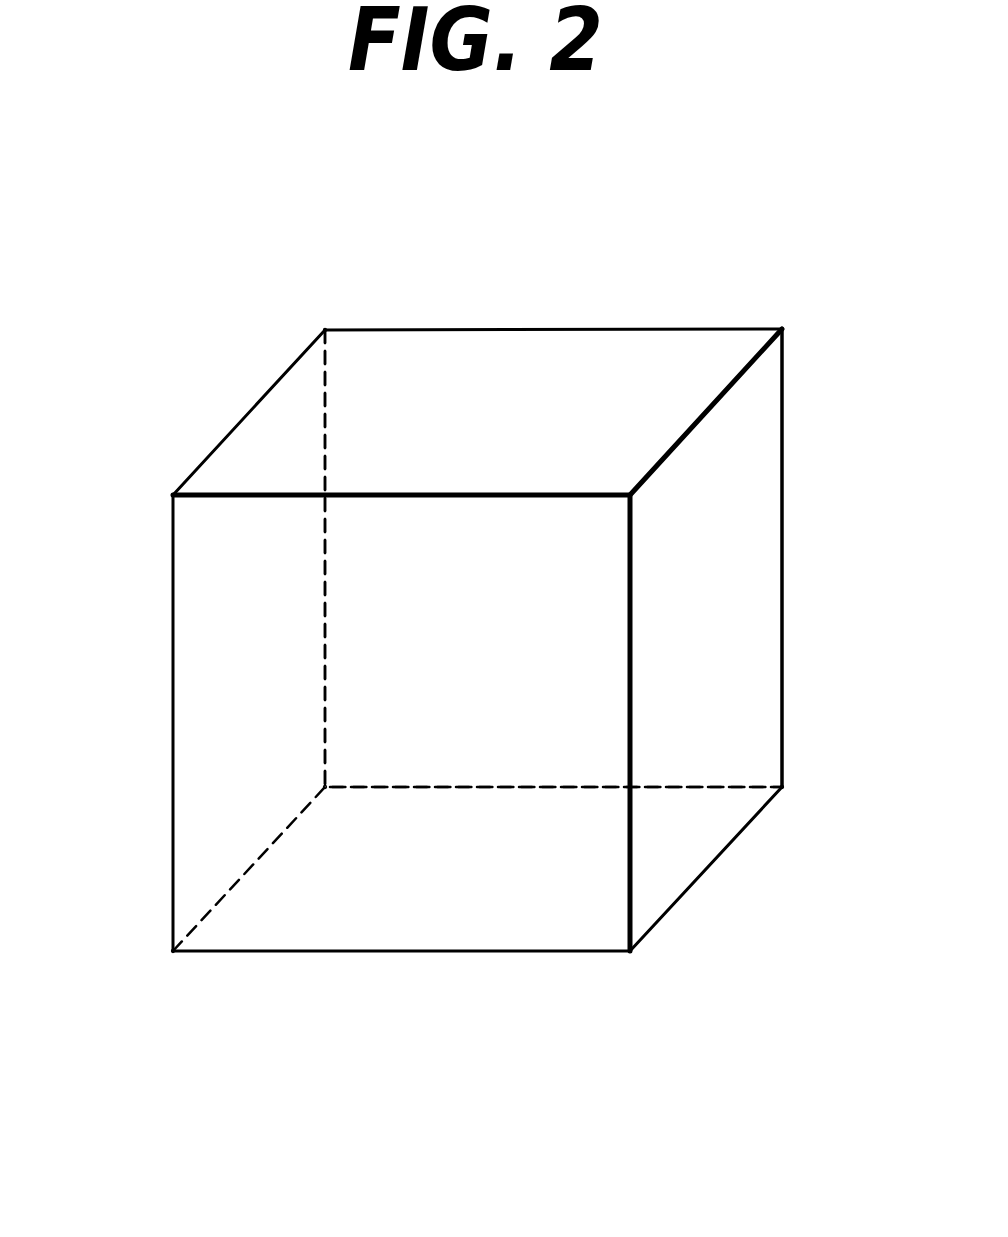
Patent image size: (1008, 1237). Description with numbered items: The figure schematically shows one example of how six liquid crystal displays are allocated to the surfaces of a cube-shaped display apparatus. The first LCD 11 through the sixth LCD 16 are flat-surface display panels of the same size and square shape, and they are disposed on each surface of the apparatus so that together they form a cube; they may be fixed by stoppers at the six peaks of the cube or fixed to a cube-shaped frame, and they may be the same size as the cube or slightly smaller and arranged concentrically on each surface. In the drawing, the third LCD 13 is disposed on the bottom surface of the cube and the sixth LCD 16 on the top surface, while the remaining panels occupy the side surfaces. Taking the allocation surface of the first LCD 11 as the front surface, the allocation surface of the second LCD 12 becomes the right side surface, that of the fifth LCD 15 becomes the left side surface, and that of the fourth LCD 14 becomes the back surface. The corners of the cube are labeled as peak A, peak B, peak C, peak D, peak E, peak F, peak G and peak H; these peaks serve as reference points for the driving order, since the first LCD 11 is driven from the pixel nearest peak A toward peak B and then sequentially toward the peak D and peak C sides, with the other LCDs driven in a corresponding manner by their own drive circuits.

The first LCD 11 is at (400, 745).
The second LCD 12 is at (737, 703).
The third LCD 13 is at (525, 898).
The fourth LCD 14 is at (735, 477).
The fifth LCD 15 is at (245, 656).
The sixth LCD 16 is at (523, 387).
The peak A is at (173, 495).
The peak B is at (630, 495).
The peak C is at (632, 951).
The peak D is at (173, 951).
The peak E is at (325, 330).
The peak F is at (782, 329).
The peak G is at (783, 787).
The peak H is at (327, 787).